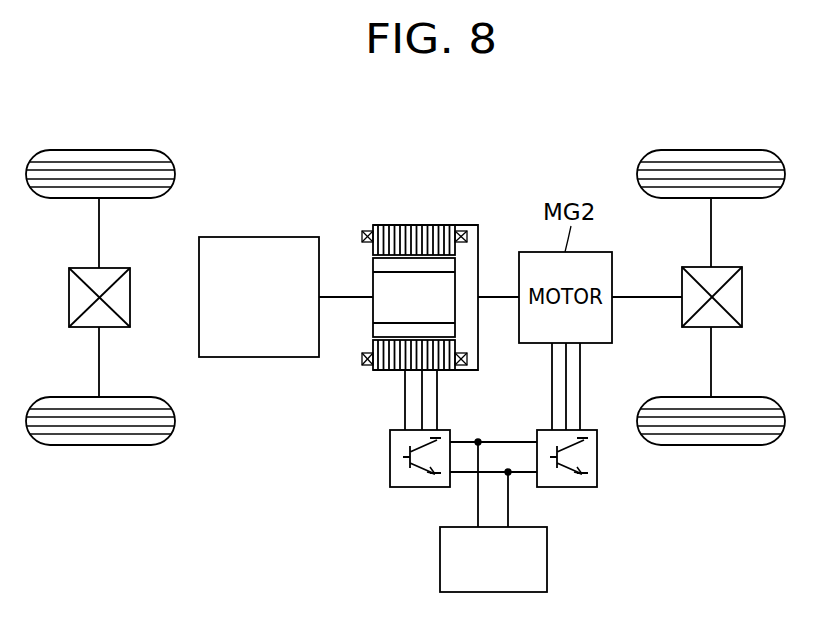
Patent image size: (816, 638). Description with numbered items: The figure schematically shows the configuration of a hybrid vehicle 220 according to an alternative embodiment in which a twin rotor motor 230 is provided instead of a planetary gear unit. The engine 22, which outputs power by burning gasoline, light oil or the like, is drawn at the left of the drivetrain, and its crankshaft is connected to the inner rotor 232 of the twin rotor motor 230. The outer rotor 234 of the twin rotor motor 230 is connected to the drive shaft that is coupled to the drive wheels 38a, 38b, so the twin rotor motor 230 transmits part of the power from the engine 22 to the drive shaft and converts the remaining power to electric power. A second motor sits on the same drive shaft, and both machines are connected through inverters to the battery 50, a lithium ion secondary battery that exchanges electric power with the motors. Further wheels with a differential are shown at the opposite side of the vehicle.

The hybrid vehicle 220 is at (522, 105).
The engine 22 is at (258, 237).
The twin rotor motor 230 is at (405, 248).
The inner rotor 232 is at (448, 166).
The outer rotor 234 is at (427, 225).
The drive wheel 38a is at (711, 150).
The drive wheel 38b is at (712, 446).
The battery 50 is at (548, 558).